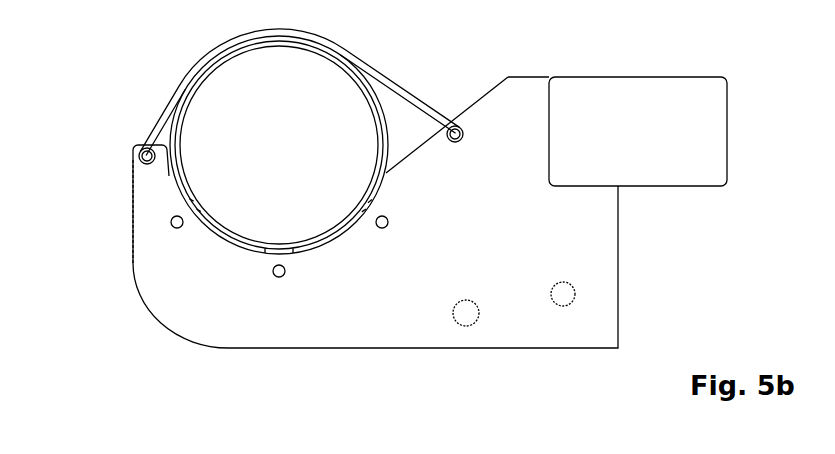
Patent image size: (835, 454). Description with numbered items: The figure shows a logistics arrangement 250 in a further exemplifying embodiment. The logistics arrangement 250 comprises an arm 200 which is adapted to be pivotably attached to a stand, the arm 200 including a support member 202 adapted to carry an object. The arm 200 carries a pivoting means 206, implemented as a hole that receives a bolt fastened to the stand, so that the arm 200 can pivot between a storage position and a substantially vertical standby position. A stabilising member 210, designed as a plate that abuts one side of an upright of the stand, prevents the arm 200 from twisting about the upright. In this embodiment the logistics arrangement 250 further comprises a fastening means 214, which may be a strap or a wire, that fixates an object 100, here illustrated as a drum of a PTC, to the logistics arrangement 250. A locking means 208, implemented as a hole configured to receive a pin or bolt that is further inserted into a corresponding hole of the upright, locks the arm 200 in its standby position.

The object 100 is at (196, 198).
The arm 200 is at (340, 328).
The support member 202 is at (143, 195).
The pivoting means 206 is at (568, 297).
The locking means 208 is at (466, 320).
The stabilising member 210 is at (720, 146).
The fastening means 214 is at (413, 100).
The logistics arrangement 250 is at (106, 339).